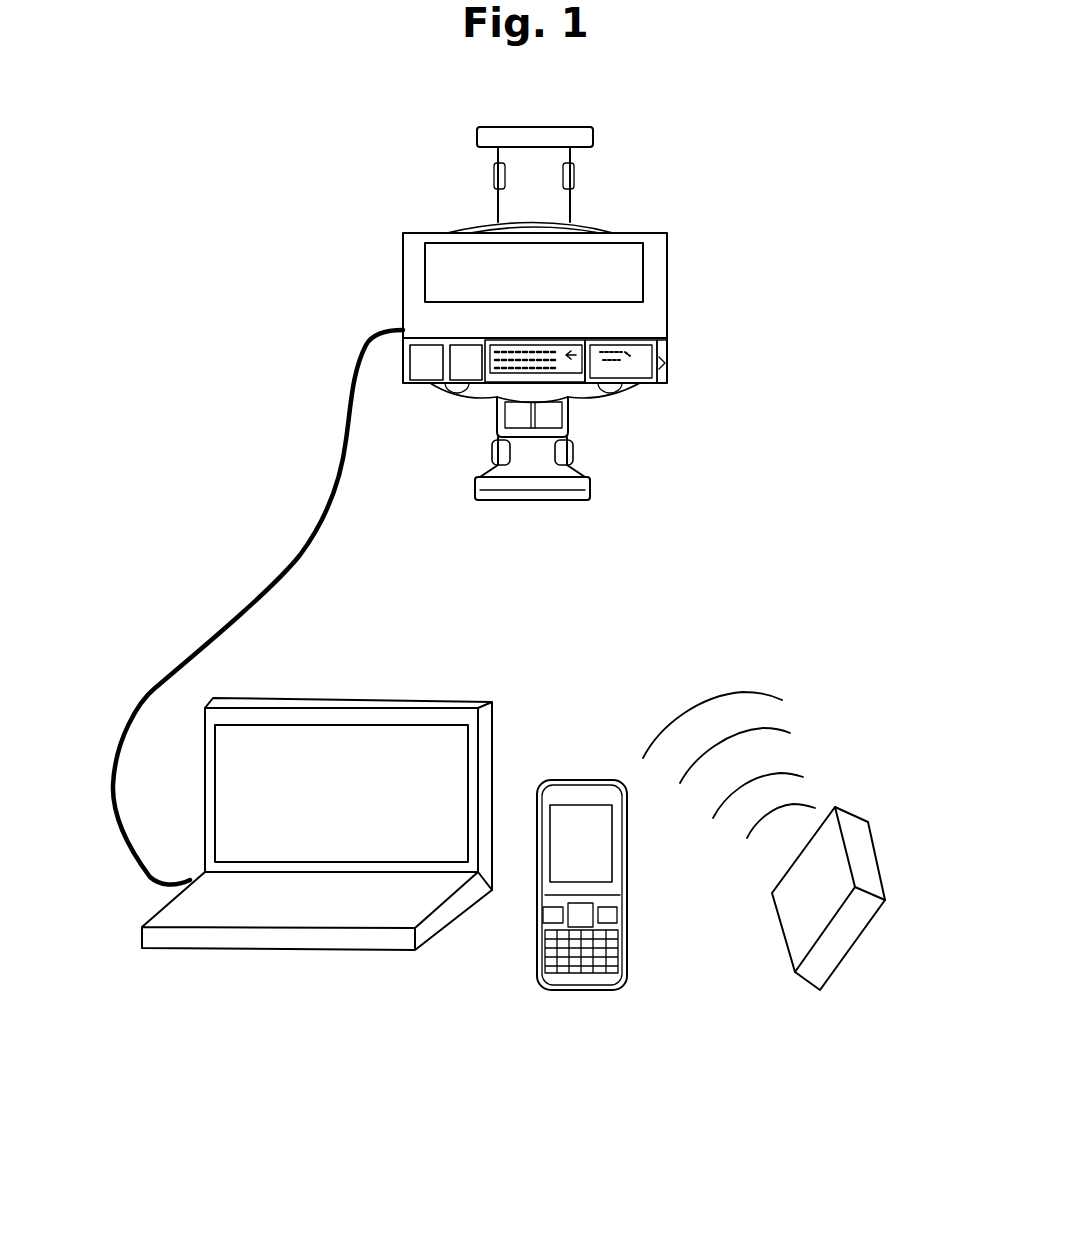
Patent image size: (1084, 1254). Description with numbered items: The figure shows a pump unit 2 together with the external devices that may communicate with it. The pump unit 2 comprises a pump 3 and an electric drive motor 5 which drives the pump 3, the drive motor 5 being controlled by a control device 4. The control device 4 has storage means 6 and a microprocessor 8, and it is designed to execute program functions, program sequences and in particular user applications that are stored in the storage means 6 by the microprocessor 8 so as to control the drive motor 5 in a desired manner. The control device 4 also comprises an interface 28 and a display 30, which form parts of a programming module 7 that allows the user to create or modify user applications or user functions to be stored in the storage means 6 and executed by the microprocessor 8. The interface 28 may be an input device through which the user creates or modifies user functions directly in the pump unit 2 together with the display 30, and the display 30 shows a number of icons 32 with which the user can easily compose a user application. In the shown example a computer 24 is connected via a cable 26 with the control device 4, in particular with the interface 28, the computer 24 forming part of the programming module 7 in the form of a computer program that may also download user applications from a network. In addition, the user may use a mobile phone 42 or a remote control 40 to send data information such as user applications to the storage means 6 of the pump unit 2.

The pump unit 2 is at (443, 345).
The pump 3 is at (585, 218).
The control device 4 is at (667, 323).
The electric drive motor 5 is at (570, 400).
The storage means 6 is at (470, 365).
The programming module 7 is at (667, 383).
The microprocessor 8 is at (418, 370).
The computer 24 is at (255, 958).
The cable 26 is at (205, 632).
The interface 28 is at (568, 353).
The display 30 is at (645, 339).
The icons 32 is at (622, 363).
The remote control 40 is at (790, 917).
The mobile phone 42 is at (600, 972).